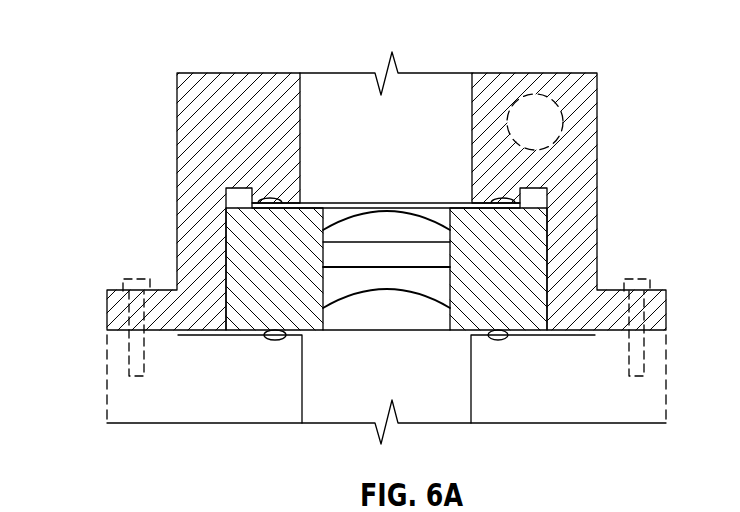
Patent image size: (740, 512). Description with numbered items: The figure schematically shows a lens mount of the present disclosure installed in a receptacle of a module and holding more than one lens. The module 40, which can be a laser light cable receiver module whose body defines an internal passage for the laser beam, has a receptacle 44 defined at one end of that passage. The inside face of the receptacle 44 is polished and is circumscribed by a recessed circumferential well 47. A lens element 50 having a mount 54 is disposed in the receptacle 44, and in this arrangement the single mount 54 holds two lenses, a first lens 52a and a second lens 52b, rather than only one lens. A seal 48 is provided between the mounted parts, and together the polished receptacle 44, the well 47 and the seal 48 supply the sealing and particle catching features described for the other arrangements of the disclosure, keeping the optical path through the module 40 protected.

The module 40 is at (80, 44).
The receptacle 44 is at (228, 243).
The well 47 is at (222, 196).
The seal 48 is at (275, 200).
The lens element 50 is at (340, 403).
The lens 52a is at (393, 222).
The lens 52b is at (413, 280).
The mount 54 is at (550, 265).